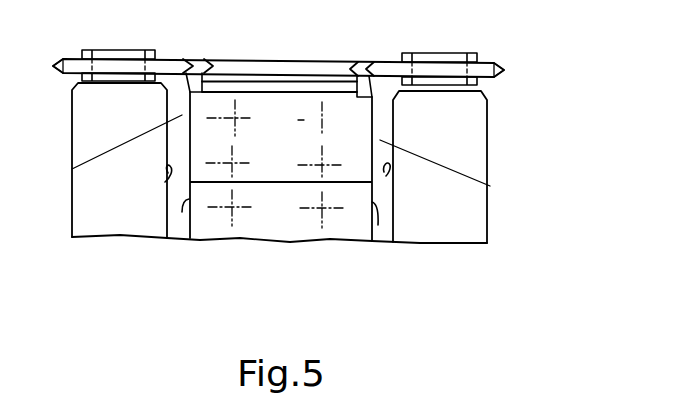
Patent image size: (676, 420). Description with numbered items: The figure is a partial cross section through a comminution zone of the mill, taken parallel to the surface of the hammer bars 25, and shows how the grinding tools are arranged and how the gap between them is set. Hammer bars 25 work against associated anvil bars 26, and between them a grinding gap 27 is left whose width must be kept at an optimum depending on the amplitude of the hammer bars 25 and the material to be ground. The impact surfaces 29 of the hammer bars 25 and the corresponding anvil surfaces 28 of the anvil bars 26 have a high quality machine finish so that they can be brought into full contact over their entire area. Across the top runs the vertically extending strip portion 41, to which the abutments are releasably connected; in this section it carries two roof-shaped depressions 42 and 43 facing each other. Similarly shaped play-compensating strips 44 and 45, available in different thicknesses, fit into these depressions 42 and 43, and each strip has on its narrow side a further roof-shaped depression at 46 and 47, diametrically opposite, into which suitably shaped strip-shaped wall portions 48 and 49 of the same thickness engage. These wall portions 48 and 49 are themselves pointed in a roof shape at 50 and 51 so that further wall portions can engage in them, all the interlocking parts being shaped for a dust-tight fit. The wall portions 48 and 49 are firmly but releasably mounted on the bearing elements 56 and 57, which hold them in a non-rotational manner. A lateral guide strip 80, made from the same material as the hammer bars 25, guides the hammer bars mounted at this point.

The hammer bars 25 is at (317, 222).
The anvil bars 26 is at (85, 132).
The gap 27 is at (72, 169).
The anvil surfaces 28 is at (165, 182).
The impact surfaces 29 is at (182, 212).
The strip portion 41 is at (283, 68).
The roof-shaped depression 42 is at (218, 59).
The roof-shaped depression 43 is at (349, 61).
The play-compensating strip 44 is at (197, 58).
The play-compensating strip 45 is at (364, 63).
The roof-shaped depression 46 is at (192, 93).
The roof-shaped depression 47 is at (367, 79).
The strip-shaped wall portion 48 is at (68, 68).
The strip-shaped wall portion 49 is at (483, 70).
The roof-shaped point 50 is at (55, 64).
The roof-shaped point 51 is at (505, 74).
The bearing element 56 is at (90, 52).
The bearing element 57 is at (470, 53).
The lateral guide strip 80 is at (323, 84).